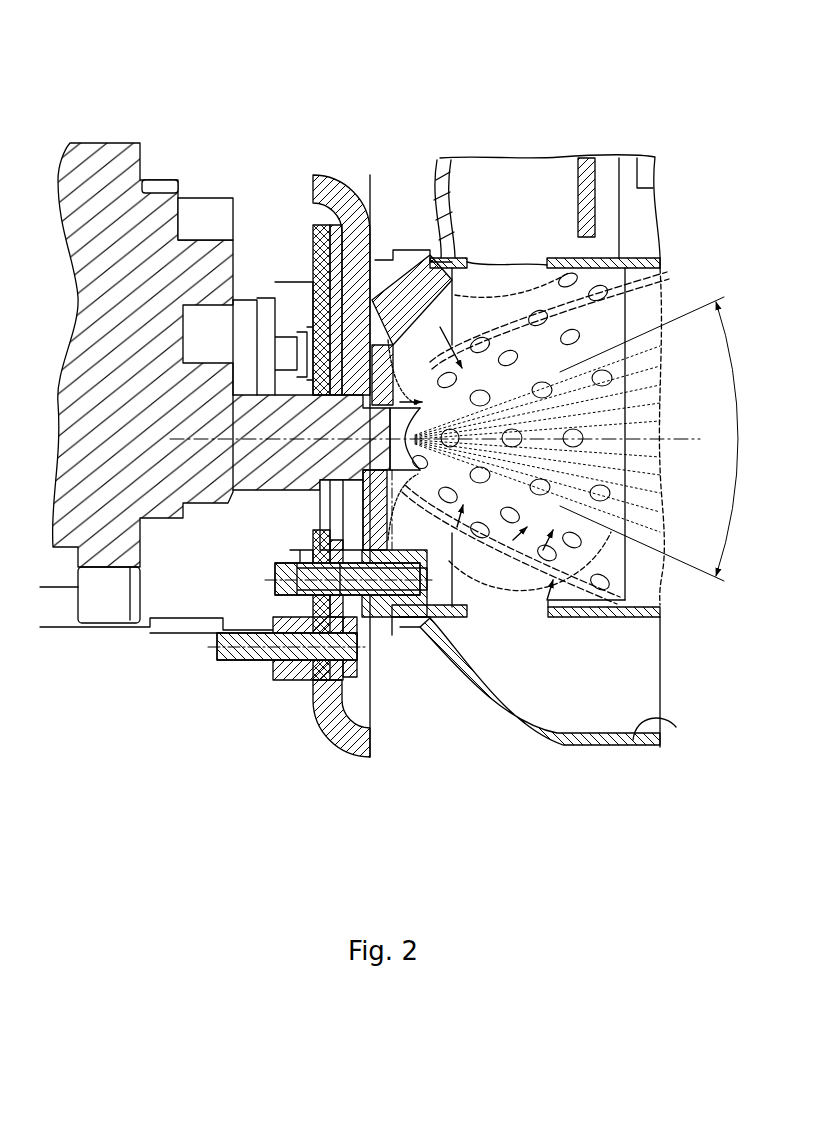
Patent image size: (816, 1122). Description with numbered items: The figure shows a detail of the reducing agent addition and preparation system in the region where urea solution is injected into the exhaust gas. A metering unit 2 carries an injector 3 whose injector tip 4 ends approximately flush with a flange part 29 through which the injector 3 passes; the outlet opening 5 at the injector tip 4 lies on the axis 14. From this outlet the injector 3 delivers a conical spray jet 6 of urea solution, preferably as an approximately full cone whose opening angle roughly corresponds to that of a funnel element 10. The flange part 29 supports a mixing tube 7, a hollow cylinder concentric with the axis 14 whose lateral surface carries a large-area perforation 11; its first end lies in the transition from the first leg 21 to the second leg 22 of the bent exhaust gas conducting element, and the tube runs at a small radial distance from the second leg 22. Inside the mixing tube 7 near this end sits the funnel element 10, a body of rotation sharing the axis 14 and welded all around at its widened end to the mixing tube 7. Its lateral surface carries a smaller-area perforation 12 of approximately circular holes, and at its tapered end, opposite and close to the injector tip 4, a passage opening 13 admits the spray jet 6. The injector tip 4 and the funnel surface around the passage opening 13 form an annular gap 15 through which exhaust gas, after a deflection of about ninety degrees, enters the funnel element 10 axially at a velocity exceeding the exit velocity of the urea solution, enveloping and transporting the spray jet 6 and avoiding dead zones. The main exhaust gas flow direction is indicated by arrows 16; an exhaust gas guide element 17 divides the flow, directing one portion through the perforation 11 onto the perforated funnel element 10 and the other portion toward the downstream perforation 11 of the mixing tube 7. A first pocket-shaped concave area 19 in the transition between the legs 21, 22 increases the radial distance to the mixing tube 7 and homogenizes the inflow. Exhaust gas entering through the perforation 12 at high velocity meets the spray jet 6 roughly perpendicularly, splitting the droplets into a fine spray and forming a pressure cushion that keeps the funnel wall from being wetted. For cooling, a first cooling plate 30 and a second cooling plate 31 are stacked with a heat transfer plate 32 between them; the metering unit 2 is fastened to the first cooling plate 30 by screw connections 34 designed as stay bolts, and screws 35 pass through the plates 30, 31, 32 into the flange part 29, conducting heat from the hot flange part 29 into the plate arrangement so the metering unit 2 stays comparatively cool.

The metering unit 2 is at (100, 140).
The injector 3 is at (250, 497).
The injector tip 4 is at (336, 500).
The outlet opening 5 is at (400, 398).
The spray jet 6 is at (646, 388).
The mixing tube 7 is at (610, 623).
The funnel element 10 is at (552, 588).
The perforation 11 is at (581, 598).
The perforation 12 is at (627, 545).
The passage opening 13 is at (465, 492).
The axis 14 is at (687, 445).
The annular gap 15 is at (407, 577).
The arrows 16 is at (553, 343).
The exhaust gas guide element 17 is at (583, 200).
The first pocket-shaped concave area 19 is at (676, 727).
The first leg 21 is at (457, 192).
The second leg 22 is at (588, 748).
The flange part 29 is at (398, 252).
The first cooling plate 30 is at (373, 200).
The second cooling plate 31 is at (317, 210).
The heat transfer plate 32 is at (323, 210).
The screw connections 34 is at (297, 683).
The screws 35 is at (273, 580).